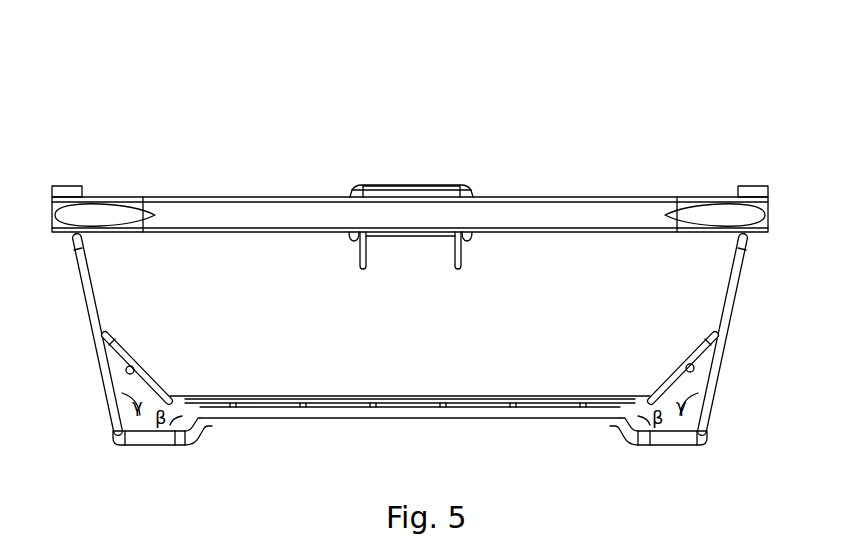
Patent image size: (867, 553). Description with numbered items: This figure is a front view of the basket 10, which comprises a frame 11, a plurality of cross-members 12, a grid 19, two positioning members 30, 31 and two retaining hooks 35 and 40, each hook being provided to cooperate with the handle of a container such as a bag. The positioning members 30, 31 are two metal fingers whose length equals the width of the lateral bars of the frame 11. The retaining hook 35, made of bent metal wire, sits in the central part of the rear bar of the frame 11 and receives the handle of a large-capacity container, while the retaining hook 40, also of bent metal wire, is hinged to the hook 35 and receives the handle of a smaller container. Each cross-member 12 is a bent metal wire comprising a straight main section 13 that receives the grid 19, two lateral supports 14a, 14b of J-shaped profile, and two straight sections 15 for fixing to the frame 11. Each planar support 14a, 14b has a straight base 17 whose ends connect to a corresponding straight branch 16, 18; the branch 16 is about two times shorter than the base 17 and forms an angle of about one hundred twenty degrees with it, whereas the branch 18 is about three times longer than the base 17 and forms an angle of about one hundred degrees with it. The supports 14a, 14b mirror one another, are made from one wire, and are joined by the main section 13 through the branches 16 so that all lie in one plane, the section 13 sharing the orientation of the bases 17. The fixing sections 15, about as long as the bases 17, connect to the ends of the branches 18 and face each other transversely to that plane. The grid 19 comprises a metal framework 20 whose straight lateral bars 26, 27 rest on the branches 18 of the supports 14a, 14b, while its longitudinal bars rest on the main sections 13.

The basket 10 is at (516, 88).
The frame 11 is at (534, 197).
The cross-member 12 is at (764, 295).
The straight main section 13 is at (450, 418).
The lateral support 14a is at (93, 440).
The lateral support 14b is at (727, 441).
The straight fixing section 15 is at (82, 239).
The straight branch 16 is at (190, 430).
The straight base 17 is at (150, 446).
The straight branch 18 is at (102, 383).
The grid 19 is at (360, 393).
The metal framework 20 is at (492, 396).
The lateral bar 26 is at (104, 336).
The lateral bar 27 is at (716, 334).
The positioning member 30 is at (65, 186).
The positioning member 31 is at (745, 186).
The retaining hook 35 is at (398, 184).
The retaining hook 40 is at (366, 252).